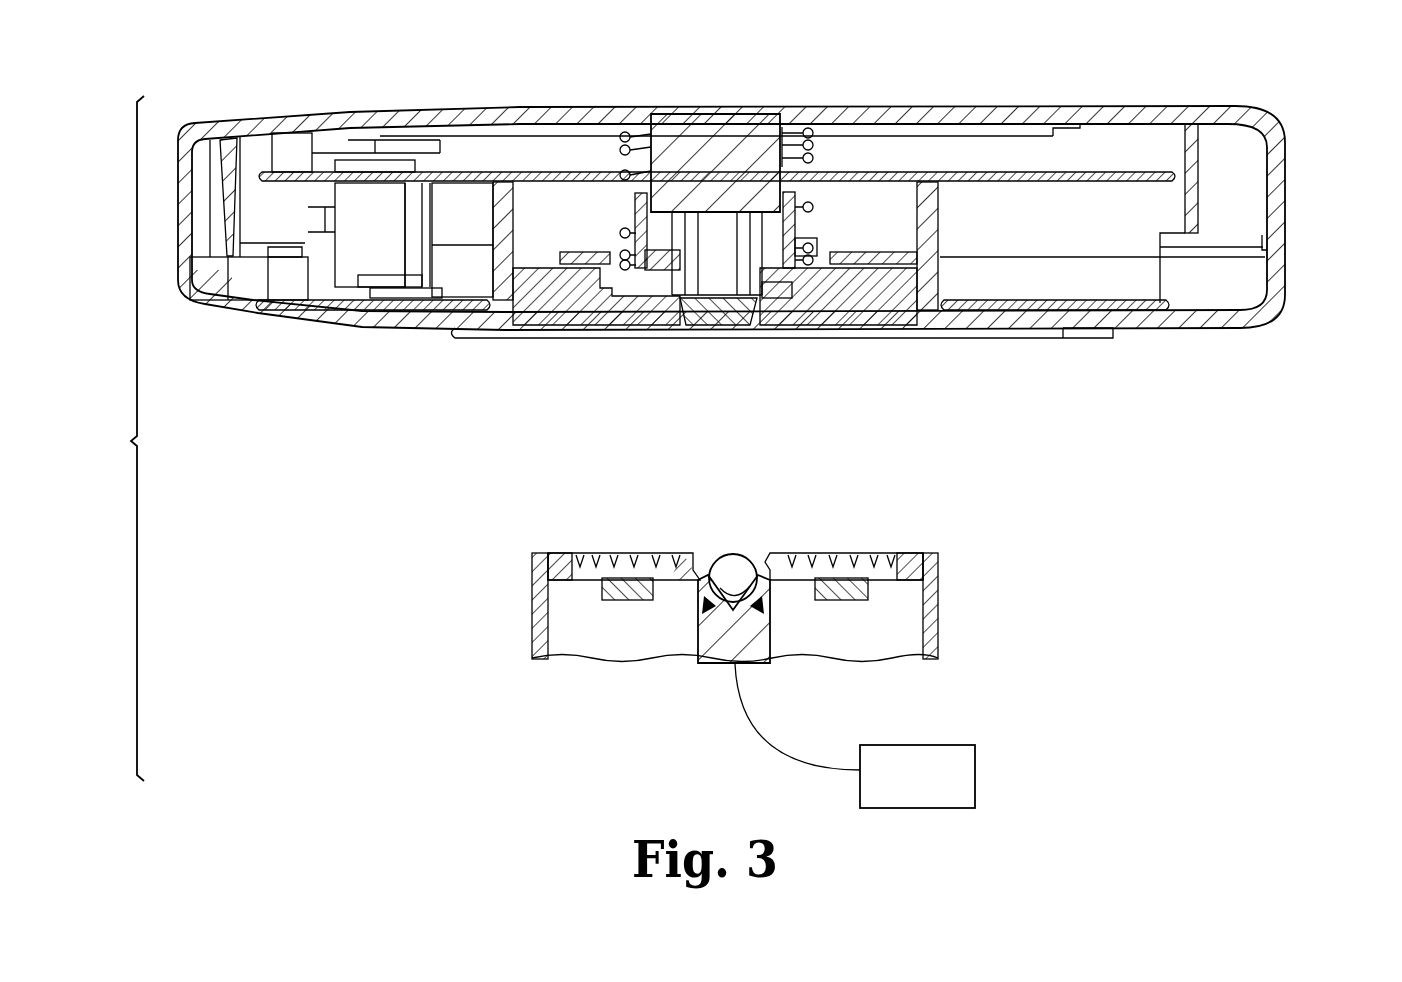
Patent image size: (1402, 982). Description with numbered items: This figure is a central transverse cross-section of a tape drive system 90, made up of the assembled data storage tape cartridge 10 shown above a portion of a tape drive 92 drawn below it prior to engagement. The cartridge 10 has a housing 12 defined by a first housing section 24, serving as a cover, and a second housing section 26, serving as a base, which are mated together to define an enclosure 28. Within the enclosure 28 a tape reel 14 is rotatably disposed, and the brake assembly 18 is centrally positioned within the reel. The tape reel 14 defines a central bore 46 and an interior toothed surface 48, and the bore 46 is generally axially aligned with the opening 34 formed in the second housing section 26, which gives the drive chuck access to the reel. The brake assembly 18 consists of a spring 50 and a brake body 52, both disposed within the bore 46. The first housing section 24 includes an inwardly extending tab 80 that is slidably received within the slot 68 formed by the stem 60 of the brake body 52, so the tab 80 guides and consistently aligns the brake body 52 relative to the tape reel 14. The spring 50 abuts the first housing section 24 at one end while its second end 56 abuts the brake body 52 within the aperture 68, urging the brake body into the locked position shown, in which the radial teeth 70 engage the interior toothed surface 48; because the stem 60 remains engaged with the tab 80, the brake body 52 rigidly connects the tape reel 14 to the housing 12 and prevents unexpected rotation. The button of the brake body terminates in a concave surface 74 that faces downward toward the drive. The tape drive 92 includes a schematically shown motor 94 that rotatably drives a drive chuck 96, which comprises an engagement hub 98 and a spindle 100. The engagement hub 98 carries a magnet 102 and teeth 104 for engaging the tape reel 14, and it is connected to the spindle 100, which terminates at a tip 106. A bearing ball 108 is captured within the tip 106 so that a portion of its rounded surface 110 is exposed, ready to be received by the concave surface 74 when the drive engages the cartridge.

The data storage tape cartridge 10 is at (1225, 103).
The housing 12 is at (1300, 218).
The tape reel 14 is at (462, 160).
The brake assembly 18 is at (622, 200).
The first housing section 24 is at (1128, 107).
The second housing section 26 is at (1279, 303).
The enclosure 28 is at (1245, 183).
The opening 34 is at (524, 323).
The central bore 46 is at (677, 301).
The interior toothed surface 48 is at (791, 326).
The spring 50 is at (818, 140).
The brake body 52 is at (810, 226).
The second end 56 is at (810, 108).
The stem 60 is at (782, 112).
The central aperture 68 is at (814, 240).
The radial teeth 70 is at (612, 310).
The concave surface 74 is at (705, 331).
The tab 80 is at (690, 128).
The tape drive system 90 is at (115, 438).
The tape drive 92 is at (996, 535).
The motor 94 is at (928, 746).
The drive chuck 96 is at (530, 652).
The engagement hub 98 is at (530, 597).
The spindle 100 is at (778, 630).
The magnet 102 is at (620, 602).
The teeth 104 is at (564, 556).
The tip 106 is at (772, 558).
The bearing ball 108 is at (726, 555).
The rounded surface 110 is at (748, 558).